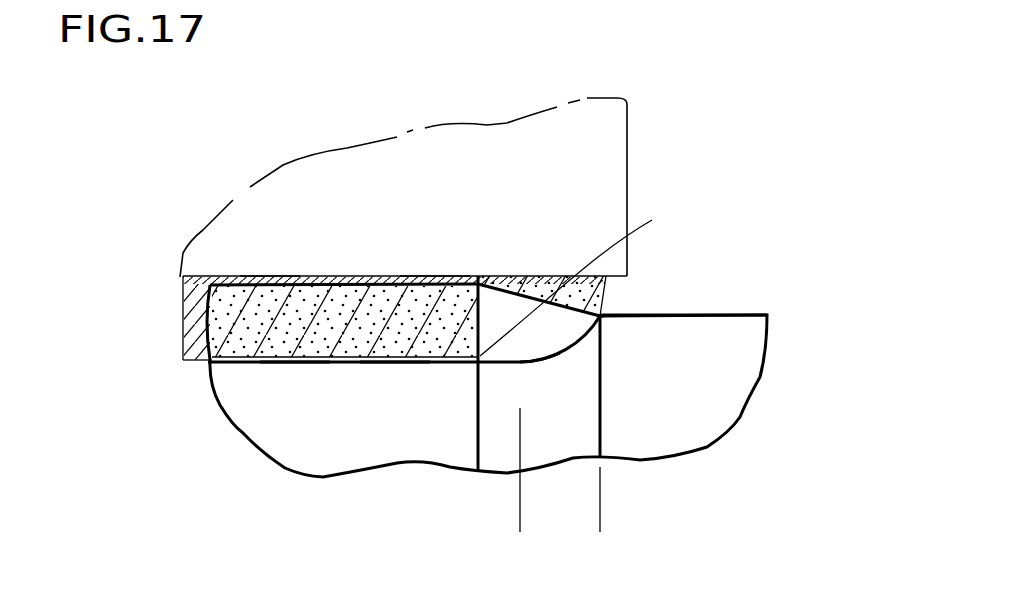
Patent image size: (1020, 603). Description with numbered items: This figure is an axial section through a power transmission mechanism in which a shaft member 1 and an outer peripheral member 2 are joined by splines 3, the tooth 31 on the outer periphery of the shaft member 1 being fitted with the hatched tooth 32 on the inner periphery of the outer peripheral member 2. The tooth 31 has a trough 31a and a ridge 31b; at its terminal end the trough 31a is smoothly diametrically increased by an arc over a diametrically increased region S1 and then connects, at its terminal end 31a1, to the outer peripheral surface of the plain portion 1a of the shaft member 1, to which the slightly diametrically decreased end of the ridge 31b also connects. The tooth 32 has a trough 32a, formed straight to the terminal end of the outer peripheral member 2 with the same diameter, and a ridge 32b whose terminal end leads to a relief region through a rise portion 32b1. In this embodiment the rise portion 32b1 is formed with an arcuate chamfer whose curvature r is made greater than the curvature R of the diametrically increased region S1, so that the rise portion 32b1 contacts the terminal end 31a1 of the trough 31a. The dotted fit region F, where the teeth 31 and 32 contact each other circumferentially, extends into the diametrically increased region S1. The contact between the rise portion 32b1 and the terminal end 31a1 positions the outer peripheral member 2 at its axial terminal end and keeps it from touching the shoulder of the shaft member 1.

The shaft member 1 is at (720, 456).
The plain portion 1a is at (708, 313).
The outer peripheral member 2 is at (278, 160).
The splines 3 is at (336, 372).
The tooth of the shaft member 31 is at (204, 337).
The trough 31a is at (390, 362).
The terminal end of the trough 31a1 is at (603, 318).
The ridge 31b is at (253, 276).
The tooth of the outer peripheral member 32 is at (196, 296).
The trough 32a is at (425, 276).
The ridge 32b is at (292, 360).
The rise portion 32b1 is at (550, 362).
The fit region F is at (521, 300).
The curvature of the chamfer r is at (574, 276).
The curvature of the diametrically increased region R is at (550, 303).
The diametrically increased region S1 is at (600, 524).